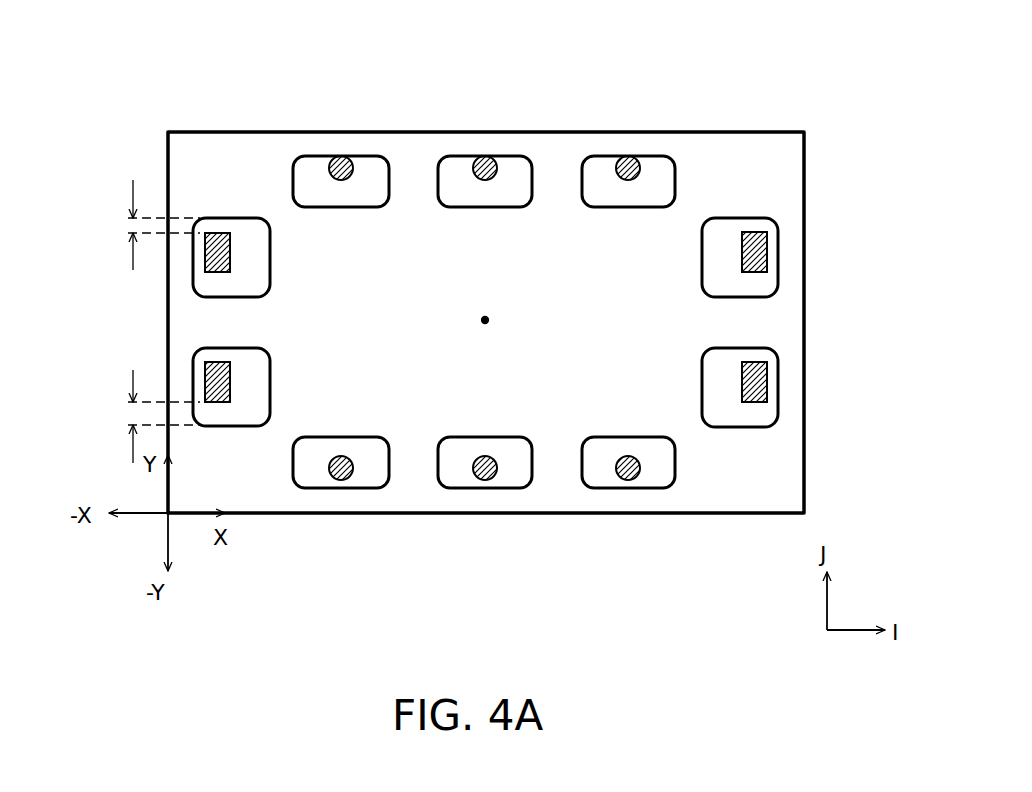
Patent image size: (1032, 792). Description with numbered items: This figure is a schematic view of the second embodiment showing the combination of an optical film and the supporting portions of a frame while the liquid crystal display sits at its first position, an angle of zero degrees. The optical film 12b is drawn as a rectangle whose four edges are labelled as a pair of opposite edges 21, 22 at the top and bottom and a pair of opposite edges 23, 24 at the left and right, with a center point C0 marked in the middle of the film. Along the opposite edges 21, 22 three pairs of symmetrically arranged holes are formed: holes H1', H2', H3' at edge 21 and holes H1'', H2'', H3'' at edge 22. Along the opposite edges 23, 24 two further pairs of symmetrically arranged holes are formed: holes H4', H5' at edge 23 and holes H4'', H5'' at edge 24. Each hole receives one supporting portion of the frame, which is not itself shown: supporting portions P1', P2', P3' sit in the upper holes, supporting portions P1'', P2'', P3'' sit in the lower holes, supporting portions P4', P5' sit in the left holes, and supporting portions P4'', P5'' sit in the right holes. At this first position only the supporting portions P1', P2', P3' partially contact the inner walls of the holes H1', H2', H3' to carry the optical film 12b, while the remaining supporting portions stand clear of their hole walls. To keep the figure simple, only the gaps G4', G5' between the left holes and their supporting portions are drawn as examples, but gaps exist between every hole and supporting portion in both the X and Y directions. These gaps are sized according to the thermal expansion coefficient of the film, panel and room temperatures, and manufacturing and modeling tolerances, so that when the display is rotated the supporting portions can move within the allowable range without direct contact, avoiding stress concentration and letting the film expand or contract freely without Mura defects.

The optical film 12b is at (188, 128).
The edge 21 is at (717, 130).
The edge 22 is at (717, 515).
The edge 23 is at (168, 151).
The edge 24 is at (805, 186).
The hole H1' is at (325, 129).
The hole H2' is at (469, 129).
The hole H3' is at (612, 129).
The hole H4' is at (176, 276).
The hole H5' is at (231, 487).
The supporting portion P1' is at (342, 116).
The supporting portion P2' is at (486, 116).
The supporting portion P3' is at (629, 116).
The supporting portion P4' is at (157, 266).
The supporting portion P5' is at (156, 373).
The gap G4' is at (141, 225).
The gap G5' is at (141, 416).
The hole H1'' is at (328, 518).
The hole H2'' is at (469, 518).
The hole H3'' is at (612, 518).
The hole H4'' is at (799, 257).
The hole H5'' is at (799, 387).
The supporting portion P1'' is at (344, 522).
The supporting portion P2'' is at (487, 523).
The supporting portion P3'' is at (630, 522).
The supporting portion P4'' is at (811, 257).
The supporting portion P5'' is at (811, 387).
The center point C0 is at (499, 335).